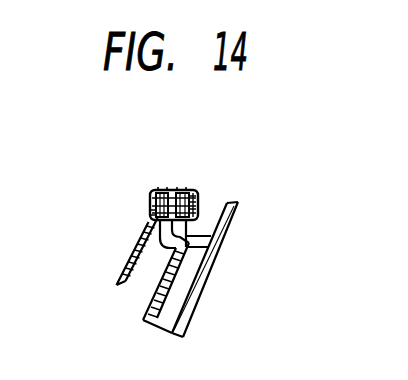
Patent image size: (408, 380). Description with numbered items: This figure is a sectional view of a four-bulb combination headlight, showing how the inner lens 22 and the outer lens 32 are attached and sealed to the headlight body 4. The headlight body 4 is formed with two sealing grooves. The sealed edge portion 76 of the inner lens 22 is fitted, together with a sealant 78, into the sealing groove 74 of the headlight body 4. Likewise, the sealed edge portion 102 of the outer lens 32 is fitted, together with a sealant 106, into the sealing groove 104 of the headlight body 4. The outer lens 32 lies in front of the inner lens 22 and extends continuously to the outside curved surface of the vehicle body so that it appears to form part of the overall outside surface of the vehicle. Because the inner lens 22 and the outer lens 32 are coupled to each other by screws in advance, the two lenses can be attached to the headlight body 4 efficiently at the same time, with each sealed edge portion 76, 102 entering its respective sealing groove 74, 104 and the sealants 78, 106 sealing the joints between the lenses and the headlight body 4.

The headlight body 4 is at (132, 257).
The inner lens 22 is at (197, 308).
The outer lens 32 is at (213, 262).
The sealing groove 74 is at (165, 190).
The sealed edge portion 76 is at (152, 197).
The sealant 78 is at (151, 212).
The sealed edge portion 102 is at (188, 191).
The sealing groove 104 is at (199, 208).
The sealant 106 is at (203, 223).